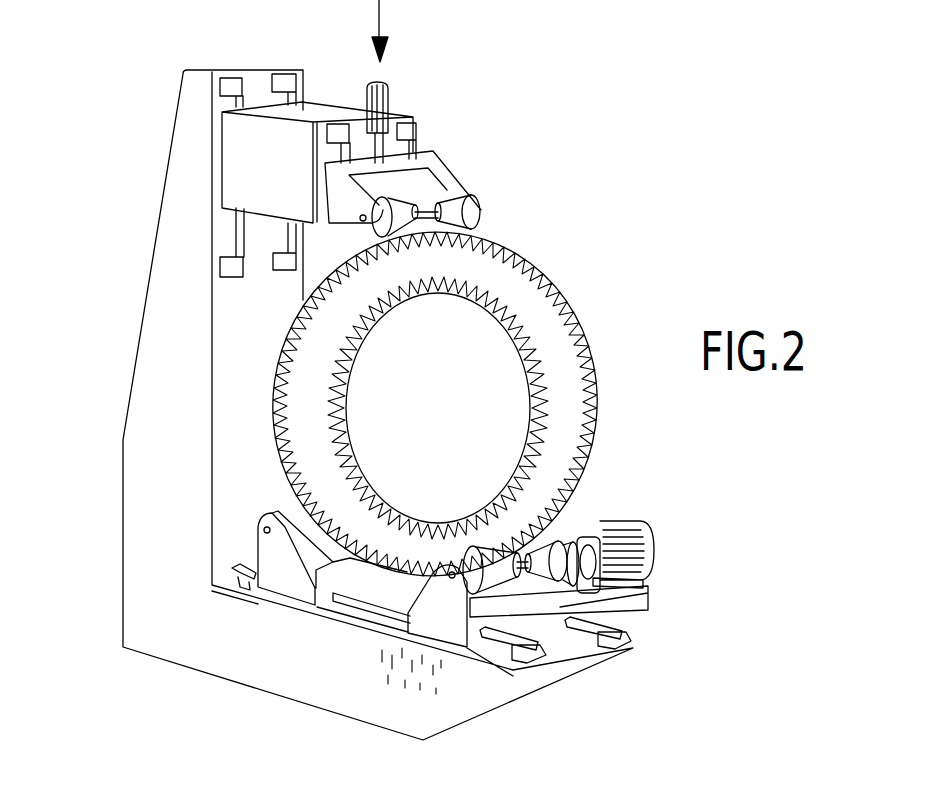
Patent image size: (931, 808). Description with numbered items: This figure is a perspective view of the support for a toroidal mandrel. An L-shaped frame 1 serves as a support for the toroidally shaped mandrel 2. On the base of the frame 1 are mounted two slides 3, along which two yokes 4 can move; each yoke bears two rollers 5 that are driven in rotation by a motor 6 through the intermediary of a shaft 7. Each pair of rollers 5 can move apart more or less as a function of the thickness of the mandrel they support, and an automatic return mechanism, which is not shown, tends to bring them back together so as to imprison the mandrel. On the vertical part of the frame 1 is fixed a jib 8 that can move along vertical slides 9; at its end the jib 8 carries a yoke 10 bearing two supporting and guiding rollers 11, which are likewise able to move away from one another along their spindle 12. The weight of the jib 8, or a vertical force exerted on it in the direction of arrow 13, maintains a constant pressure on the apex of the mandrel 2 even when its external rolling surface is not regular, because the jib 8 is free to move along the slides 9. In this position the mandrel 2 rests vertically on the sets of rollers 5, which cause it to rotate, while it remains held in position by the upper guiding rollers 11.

The L-shaped frame 1 is at (163, 508).
The toroidally shaped mandrel 2 is at (543, 330).
The slides 3 is at (590, 636).
The yokes 4 is at (443, 620).
The rollers 5 is at (576, 596).
The motor 6 is at (648, 532).
The shaft 7 is at (540, 528).
The jib 8 is at (263, 152).
The vertical slides 9 is at (237, 227).
The yoke 10 is at (443, 176).
The supporting and guiding rollers 11 is at (462, 219).
The spindle 12 is at (428, 198).
The arrow 13 is at (386, 48).